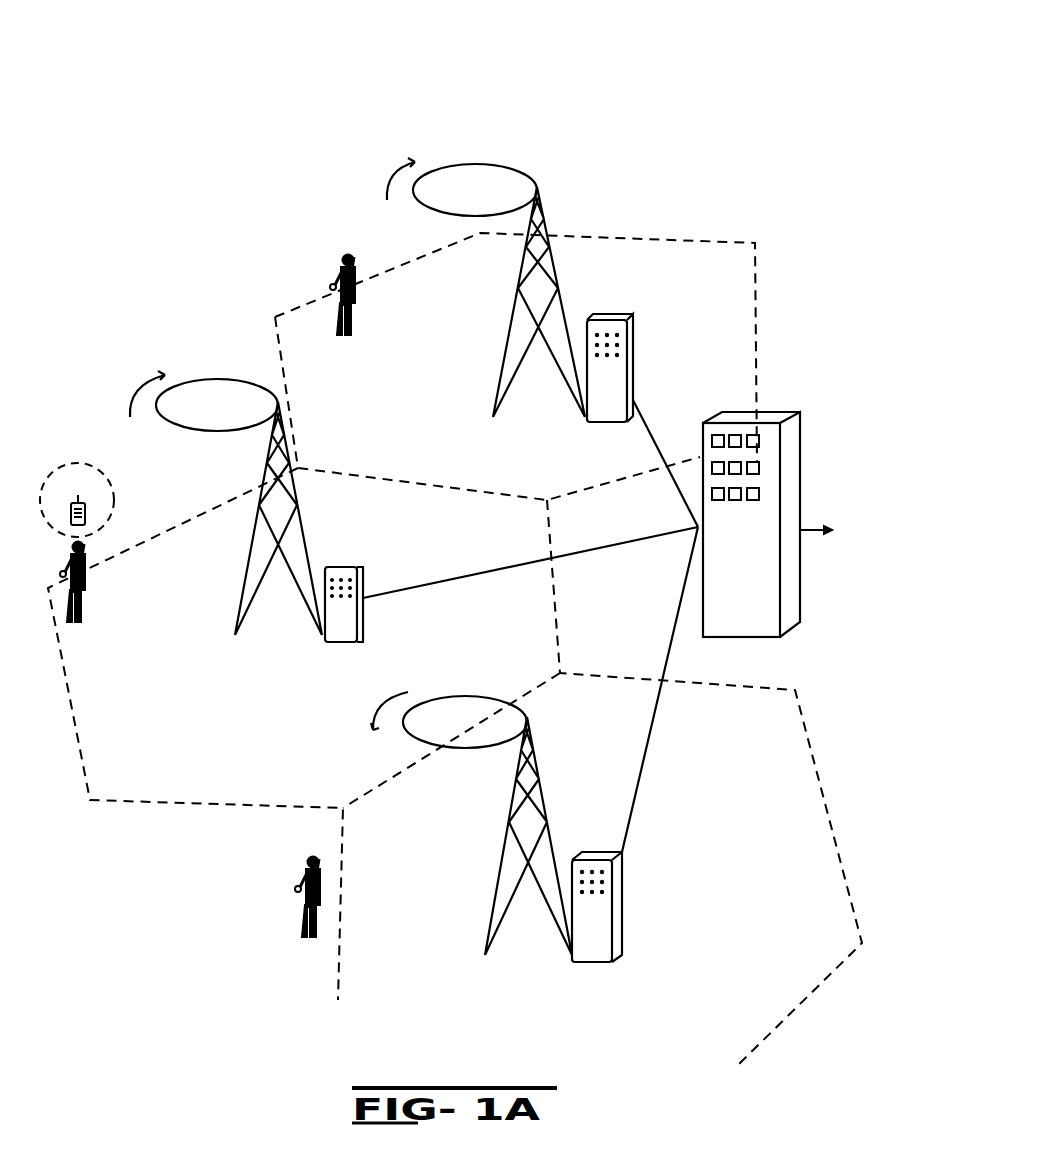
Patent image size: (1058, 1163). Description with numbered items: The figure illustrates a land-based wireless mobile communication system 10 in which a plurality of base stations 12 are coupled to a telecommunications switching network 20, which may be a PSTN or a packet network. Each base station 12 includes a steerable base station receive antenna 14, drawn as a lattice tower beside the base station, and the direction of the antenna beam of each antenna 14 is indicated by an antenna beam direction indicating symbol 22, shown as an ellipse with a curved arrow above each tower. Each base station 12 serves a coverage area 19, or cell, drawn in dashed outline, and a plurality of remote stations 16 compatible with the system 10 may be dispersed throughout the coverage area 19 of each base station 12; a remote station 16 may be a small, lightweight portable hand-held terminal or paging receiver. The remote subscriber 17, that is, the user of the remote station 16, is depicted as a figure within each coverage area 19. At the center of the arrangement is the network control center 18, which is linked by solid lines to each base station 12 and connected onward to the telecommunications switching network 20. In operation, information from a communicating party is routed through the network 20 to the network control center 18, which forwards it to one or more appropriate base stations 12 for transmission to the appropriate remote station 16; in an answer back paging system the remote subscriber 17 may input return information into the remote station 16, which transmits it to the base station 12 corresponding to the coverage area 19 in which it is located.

The wireless mobile communication system 10 is at (668, 109).
The base station 12 is at (620, 315).
The steerable base station receive antenna 14 is at (540, 186).
The remote station 16 is at (88, 512).
The remote subscriber 17 is at (355, 297).
The network control center 18 is at (753, 637).
The coverage area 19 is at (690, 240).
The telecommunications switching network 20 is at (866, 556).
The antenna beam direction indicating symbol 22 is at (478, 164).